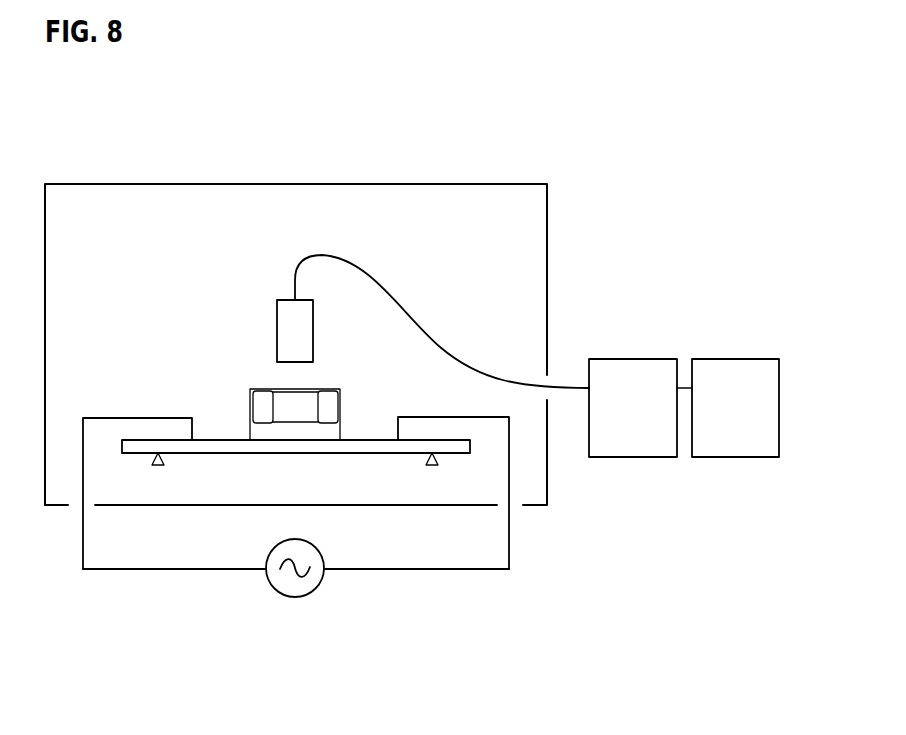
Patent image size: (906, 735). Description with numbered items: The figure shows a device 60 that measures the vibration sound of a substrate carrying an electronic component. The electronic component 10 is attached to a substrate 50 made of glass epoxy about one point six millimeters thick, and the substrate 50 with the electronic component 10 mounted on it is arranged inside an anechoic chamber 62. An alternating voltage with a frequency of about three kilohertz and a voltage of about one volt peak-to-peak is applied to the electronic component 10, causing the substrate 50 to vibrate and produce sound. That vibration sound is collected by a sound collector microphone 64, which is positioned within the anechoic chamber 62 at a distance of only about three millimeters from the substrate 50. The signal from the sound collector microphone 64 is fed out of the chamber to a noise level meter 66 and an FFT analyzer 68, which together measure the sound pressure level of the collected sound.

The device 60 is at (104, 176).
The anechoic chamber 62 is at (548, 223).
The sound collector microphone 64 is at (277, 300).
The noise level meter 66 is at (632, 358).
The FFT analyzer 68 is at (728, 358).
The substrate 50 is at (378, 440).
The electronic component 10 is at (232, 373).